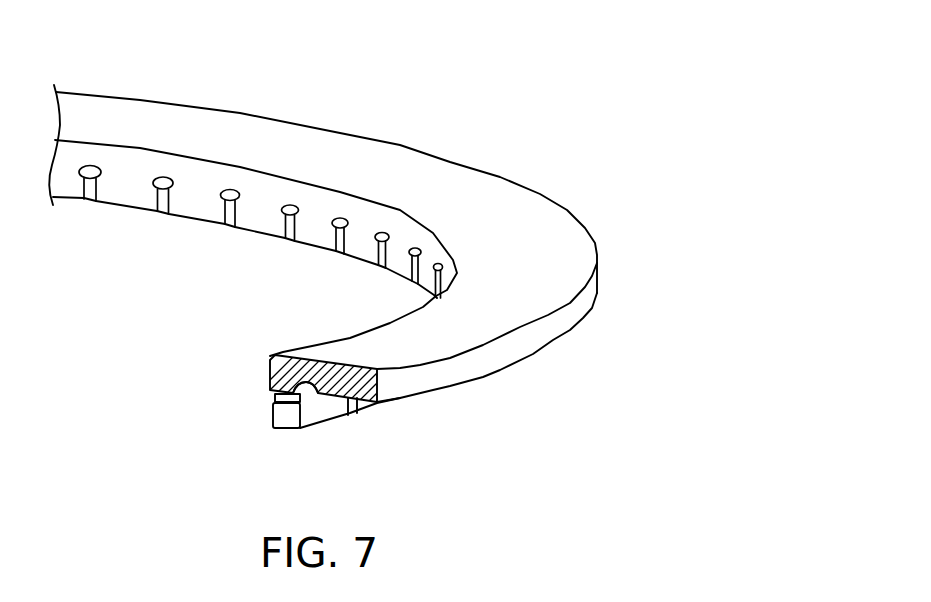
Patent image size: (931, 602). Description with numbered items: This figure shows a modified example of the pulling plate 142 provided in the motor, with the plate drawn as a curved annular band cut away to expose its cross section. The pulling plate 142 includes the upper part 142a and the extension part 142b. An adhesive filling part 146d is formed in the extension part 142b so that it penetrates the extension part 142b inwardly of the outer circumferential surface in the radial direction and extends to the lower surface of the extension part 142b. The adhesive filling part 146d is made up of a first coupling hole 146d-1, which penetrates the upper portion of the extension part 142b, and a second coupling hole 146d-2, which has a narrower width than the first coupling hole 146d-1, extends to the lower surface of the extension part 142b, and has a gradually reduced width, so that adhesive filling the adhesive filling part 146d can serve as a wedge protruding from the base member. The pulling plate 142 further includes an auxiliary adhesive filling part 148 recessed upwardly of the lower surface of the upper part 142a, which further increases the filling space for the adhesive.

The pulling plate 142 is at (582, 48).
The upper part 142a is at (377, 368).
The extension part 142b is at (275, 387).
The adhesive filling part 146d is at (176, 441).
The first coupling hole 146d-1 is at (277, 398).
The second coupling hole 146d-2 is at (287, 420).
The auxiliary adhesive filling part 148 is at (309, 383).